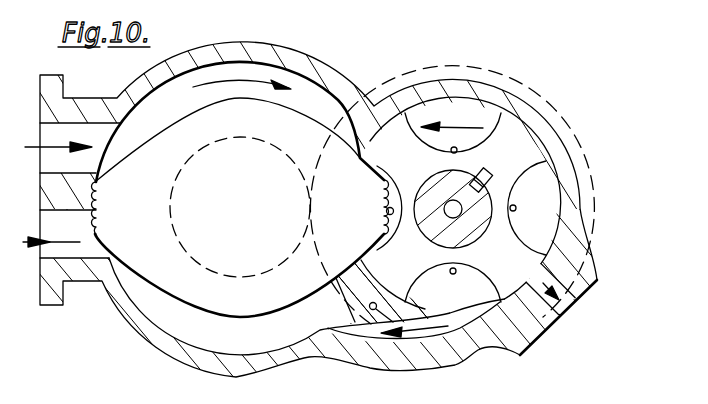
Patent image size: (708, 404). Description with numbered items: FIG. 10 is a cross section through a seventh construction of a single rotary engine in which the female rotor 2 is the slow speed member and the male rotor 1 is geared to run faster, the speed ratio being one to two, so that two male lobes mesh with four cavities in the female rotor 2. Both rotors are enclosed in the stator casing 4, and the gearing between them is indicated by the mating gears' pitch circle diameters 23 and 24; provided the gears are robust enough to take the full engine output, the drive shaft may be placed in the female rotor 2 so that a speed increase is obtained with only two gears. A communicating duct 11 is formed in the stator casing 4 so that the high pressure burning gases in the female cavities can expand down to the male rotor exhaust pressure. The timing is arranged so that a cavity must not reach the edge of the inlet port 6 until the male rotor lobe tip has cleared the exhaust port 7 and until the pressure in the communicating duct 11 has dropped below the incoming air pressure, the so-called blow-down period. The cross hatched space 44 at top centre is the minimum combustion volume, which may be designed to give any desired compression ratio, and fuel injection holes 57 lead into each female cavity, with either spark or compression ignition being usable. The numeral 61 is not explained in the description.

The male rotor 1 is at (148, 203).
The female rotor 2 is at (512, 159).
The stator casing 4 is at (262, 48).
The inlet port 6 is at (53, 162).
The exhaust port 7 is at (58, 230).
The communicating duct 11 is at (466, 342).
The gear pitch circle diameter 23 is at (538, 92).
The gear pitch circle diameter 24 is at (232, 282).
The minimum combustion volume 44 is at (385, 184).
The fuel injection hole 57 is at (513, 208).
The outlet passage 61 is at (578, 320).